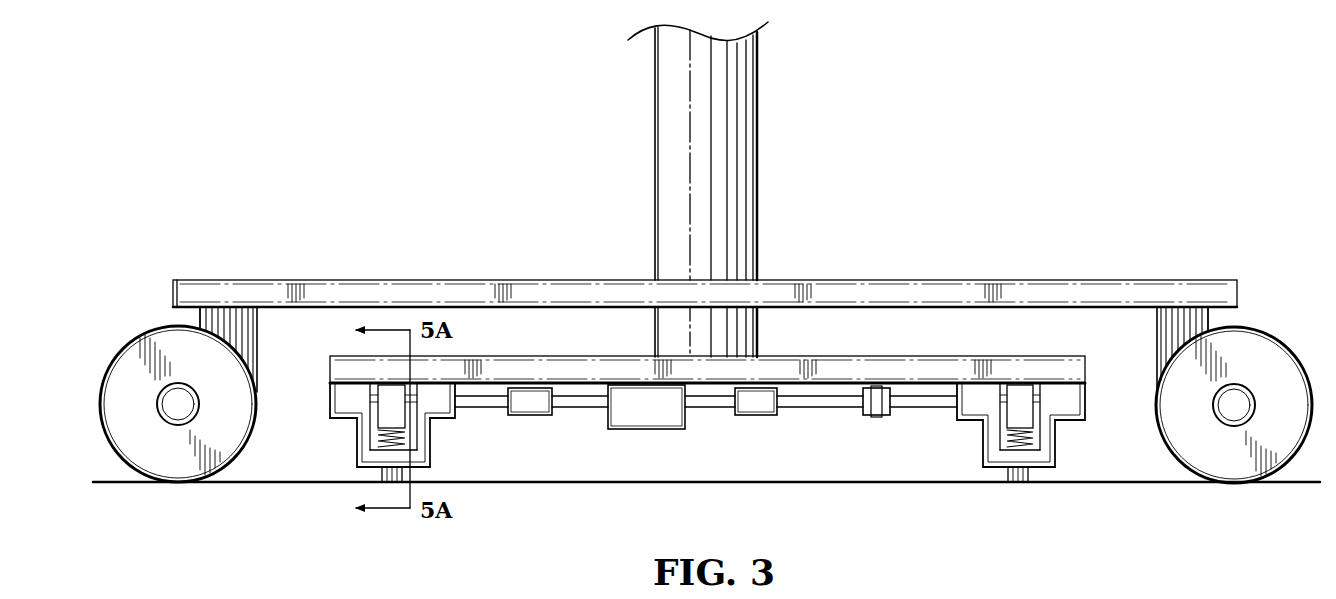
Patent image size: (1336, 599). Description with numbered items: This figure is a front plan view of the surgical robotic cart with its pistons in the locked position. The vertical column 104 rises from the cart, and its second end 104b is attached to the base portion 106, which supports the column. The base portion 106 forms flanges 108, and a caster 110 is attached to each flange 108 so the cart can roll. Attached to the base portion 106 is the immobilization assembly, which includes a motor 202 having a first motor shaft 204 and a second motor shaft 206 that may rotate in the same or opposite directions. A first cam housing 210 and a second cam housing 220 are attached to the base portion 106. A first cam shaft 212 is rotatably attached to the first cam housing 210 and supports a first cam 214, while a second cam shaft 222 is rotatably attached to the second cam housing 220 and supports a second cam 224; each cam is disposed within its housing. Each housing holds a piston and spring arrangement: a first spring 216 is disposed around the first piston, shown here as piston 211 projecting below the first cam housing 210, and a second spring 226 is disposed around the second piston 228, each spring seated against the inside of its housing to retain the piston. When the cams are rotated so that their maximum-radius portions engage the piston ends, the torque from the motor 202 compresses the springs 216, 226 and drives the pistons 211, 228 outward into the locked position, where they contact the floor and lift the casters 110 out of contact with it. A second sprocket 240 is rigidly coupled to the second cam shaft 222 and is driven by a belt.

The vertical column 104 is at (735, 88).
The second end 104b is at (733, 245).
The base portion 106 is at (1030, 235).
The flange 108 is at (228, 280).
The caster 110 is at (140, 335).
The motor 202 is at (645, 430).
The first motor shaft 204 is at (575, 407).
The second motor shaft 206 is at (710, 408).
The first cam housing 210 is at (340, 392).
The first foot 211 is at (377, 475).
The first cam shaft 212 is at (470, 408).
The first cam 214 is at (385, 408).
The first spring 216 is at (383, 433).
The second cam housing 220 is at (1072, 405).
The second cam shaft 222 is at (812, 408).
The second cam 224 is at (1015, 415).
The second spring 226 is at (1013, 438).
The second piston 228 is at (1030, 475).
The second sprocket 240 is at (862, 416).